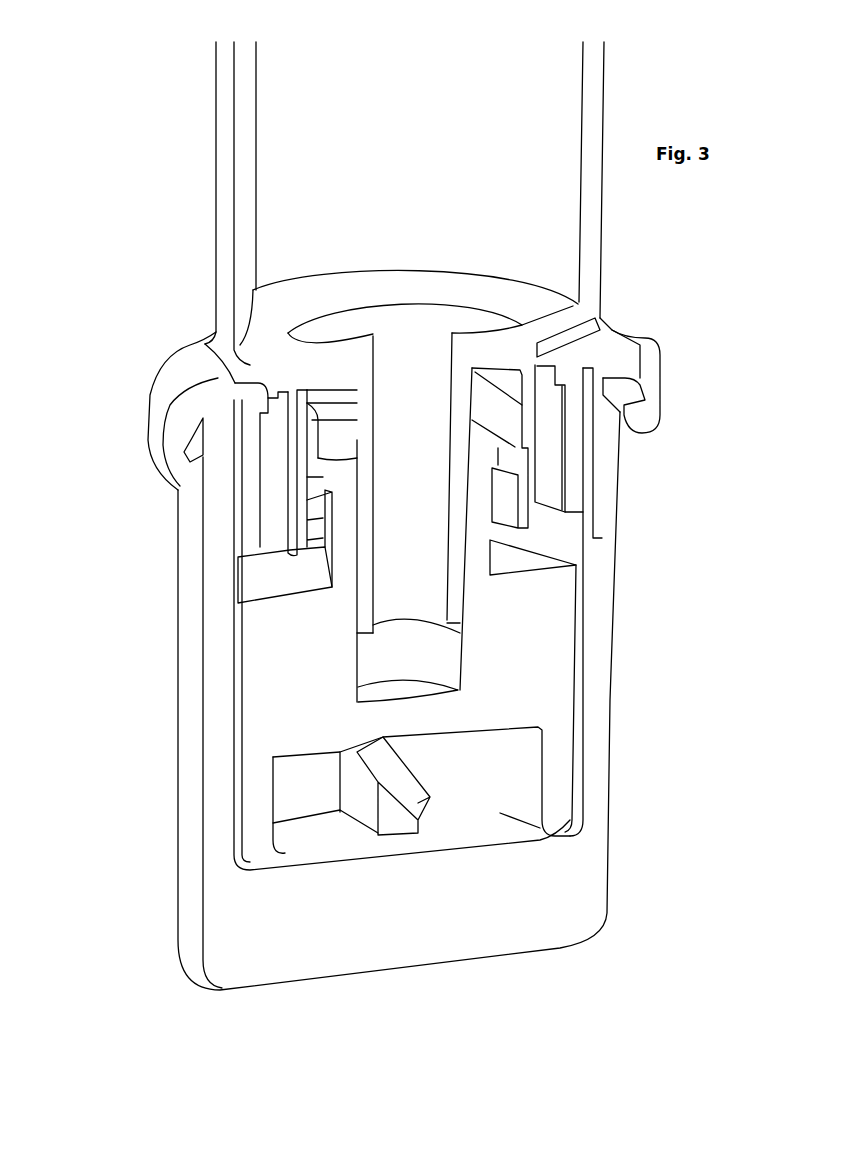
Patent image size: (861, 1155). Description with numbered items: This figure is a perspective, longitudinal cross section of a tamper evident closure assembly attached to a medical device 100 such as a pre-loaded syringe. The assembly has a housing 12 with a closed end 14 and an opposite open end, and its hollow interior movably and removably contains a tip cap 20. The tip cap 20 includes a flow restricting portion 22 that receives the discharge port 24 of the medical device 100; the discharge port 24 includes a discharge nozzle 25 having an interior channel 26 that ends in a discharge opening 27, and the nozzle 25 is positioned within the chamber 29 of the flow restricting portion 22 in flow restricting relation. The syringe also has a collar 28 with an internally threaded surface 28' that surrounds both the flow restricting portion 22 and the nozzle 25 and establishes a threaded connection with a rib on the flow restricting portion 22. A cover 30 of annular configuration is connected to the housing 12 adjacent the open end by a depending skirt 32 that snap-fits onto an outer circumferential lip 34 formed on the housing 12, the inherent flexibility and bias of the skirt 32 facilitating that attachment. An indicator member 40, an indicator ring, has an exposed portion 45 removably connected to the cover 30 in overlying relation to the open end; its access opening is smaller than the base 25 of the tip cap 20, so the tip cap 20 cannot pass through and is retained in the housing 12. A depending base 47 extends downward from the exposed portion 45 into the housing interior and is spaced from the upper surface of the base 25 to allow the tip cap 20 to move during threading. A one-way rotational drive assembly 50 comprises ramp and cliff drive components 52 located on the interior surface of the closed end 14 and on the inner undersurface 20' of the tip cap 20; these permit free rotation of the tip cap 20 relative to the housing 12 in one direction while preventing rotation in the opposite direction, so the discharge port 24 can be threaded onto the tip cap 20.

The medical device 100 is at (216, 137).
The discharge port 24 is at (430, 337).
The indicator member 40 is at (573, 362).
The cover 30 is at (655, 350).
The depending skirt 32 is at (652, 387).
The exposed portion 45 is at (233, 360).
The depending base 47 is at (255, 408).
The internally threaded surface 28' is at (208, 433).
The outer circumferential lip 34 is at (218, 440).
The flow restricting portion 22 is at (338, 480).
The discharge nozzle 25 is at (252, 752).
The collar 28 is at (615, 448).
The interior channel 26 is at (405, 550).
The discharge opening 27 is at (410, 622).
The chamber 29 is at (385, 653).
The tip cap 20 is at (449, 617).
The inner undersurface 20' is at (421, 756).
The housing 12 is at (610, 765).
The one-way rotational drive assembly 50 is at (490, 795).
The ramp and cliff drive component 52 is at (357, 802).
The closed end 14 is at (540, 953).